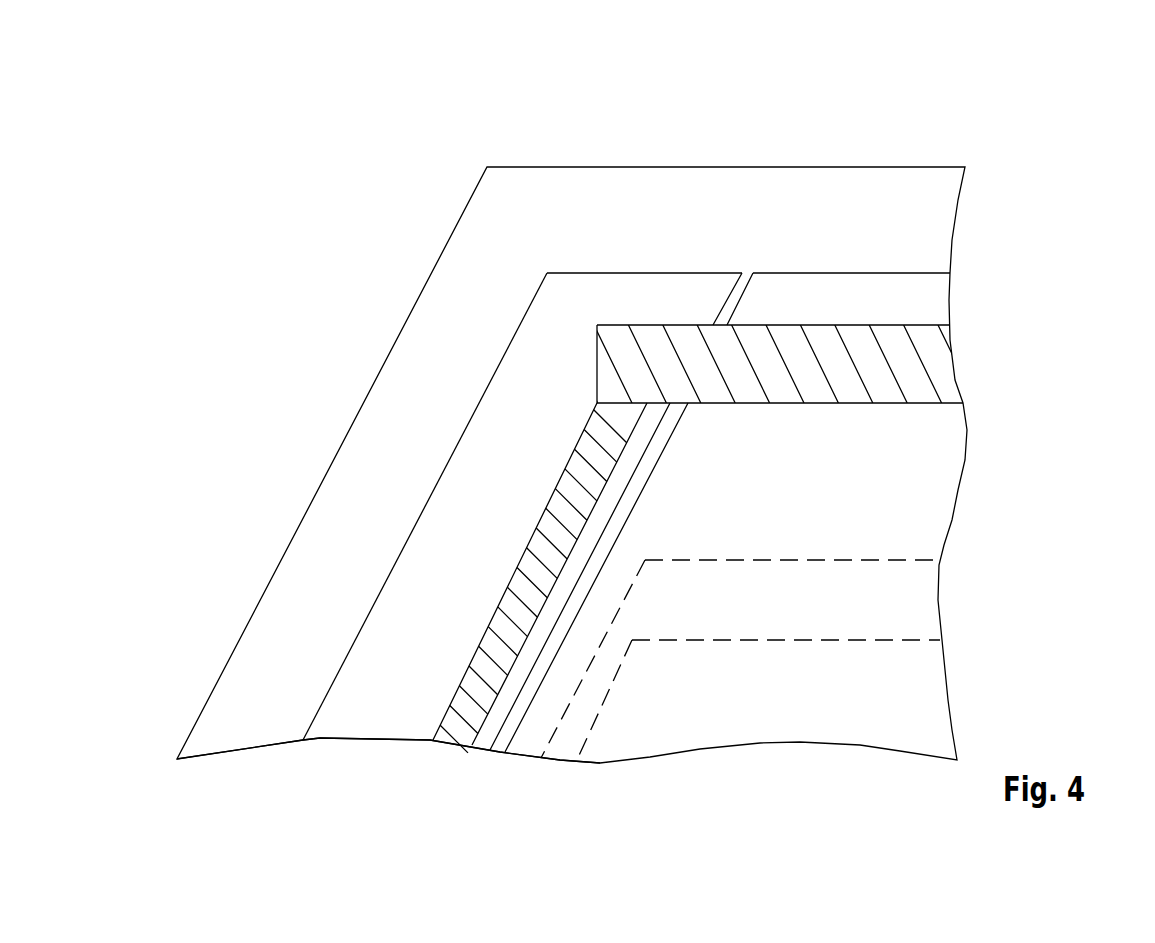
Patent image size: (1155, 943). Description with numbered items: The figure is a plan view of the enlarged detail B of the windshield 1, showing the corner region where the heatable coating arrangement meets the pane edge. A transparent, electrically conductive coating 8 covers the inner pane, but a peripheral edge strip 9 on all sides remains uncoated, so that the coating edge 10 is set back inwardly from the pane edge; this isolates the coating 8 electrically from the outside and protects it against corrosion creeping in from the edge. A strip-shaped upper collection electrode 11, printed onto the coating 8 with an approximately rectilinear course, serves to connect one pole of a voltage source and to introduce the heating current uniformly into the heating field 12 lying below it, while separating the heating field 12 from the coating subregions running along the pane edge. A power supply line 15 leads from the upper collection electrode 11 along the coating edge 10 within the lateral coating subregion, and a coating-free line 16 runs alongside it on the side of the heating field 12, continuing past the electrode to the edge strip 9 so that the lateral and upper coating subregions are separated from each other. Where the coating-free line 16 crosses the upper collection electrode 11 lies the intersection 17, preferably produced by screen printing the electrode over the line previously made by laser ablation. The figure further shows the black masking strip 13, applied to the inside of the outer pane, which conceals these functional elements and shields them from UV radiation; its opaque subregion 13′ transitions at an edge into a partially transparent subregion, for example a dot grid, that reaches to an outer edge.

The windshield 1 is at (1044, 125).
The enlarged detail of the windshield B is at (1044, 125).
The electrically conductive coating 8 is at (743, 720).
The heating field 12 is at (743, 720).
The peripheral edge strip 9 is at (490, 256).
The peripheral coating edge 10 is at (594, 273).
The upper collection electrode 11 is at (905, 353).
The masking strip 13 is at (1050, 463).
The visually concealing, opaque subregion of the masking strip 13′ is at (908, 483).
The power supply line 15 is at (447, 743).
The coating-free line 16 is at (737, 290).
The intersection 17 is at (713, 324).